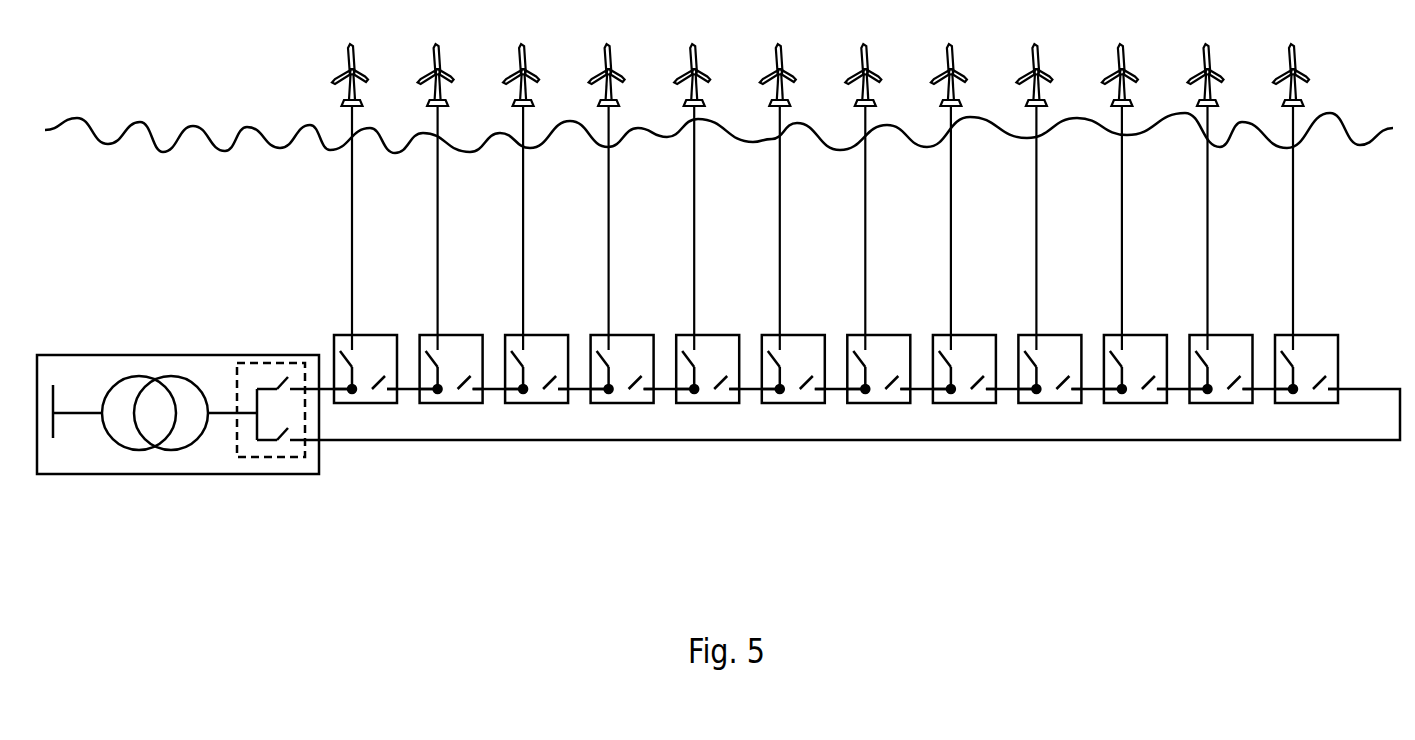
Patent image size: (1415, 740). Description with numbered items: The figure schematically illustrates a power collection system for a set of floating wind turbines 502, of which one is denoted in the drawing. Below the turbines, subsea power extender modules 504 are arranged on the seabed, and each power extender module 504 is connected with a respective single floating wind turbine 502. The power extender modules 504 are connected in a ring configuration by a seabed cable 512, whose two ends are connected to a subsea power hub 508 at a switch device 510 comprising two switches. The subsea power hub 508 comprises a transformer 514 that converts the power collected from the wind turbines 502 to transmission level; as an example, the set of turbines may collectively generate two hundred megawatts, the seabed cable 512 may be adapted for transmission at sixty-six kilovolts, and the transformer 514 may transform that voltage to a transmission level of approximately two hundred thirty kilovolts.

The floating wind turbine 502 is at (335, 62).
The subsea power extender module 504 is at (328, 338).
The subsea power hub 508 is at (178, 355).
The switch device 510 is at (270, 458).
The seabed cable 512 is at (638, 442).
The transformer 514 is at (155, 447).